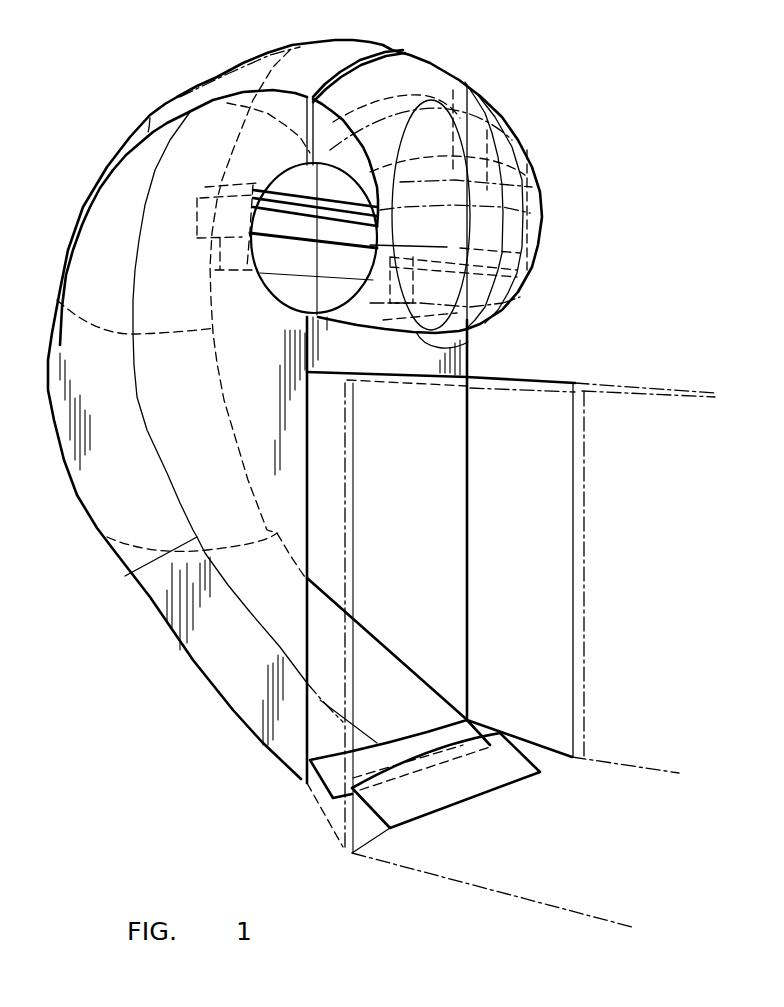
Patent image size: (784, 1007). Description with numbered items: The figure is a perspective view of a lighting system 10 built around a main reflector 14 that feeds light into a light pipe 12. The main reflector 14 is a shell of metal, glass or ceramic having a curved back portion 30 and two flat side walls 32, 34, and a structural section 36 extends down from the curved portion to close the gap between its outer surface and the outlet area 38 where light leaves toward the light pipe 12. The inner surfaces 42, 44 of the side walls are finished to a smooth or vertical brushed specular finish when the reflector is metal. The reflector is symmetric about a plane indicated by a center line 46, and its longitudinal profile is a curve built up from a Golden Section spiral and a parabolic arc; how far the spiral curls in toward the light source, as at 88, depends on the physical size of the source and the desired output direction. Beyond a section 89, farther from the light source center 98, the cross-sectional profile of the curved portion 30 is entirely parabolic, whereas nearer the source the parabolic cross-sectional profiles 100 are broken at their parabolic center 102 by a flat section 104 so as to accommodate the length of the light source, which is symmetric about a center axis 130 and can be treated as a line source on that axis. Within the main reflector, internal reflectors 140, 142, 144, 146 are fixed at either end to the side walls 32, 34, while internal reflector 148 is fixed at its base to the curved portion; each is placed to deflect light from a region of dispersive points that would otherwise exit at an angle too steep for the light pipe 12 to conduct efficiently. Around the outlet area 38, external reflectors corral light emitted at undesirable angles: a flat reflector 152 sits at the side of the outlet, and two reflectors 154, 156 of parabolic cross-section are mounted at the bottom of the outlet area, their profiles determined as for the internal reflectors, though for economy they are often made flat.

The lighting system 10 is at (108, 163).
The light pipe 12 is at (490, 890).
The main reflector 14 is at (267, 50).
The curved back portion 30 is at (157, 109).
The side wall 32 is at (200, 446).
The side wall 34 is at (420, 458).
The structural section 36 is at (396, 369).
The outlet area 38 is at (416, 626).
The inner surface of side wall 42 is at (300, 710).
The inner surface of side wall 44 is at (455, 670).
The center line 46 is at (472, 110).
The spiral curl point 88 is at (469, 342).
The section 89 is at (424, 14).
The light source center 98 is at (400, 240).
The parabolic cross-sectional profile 100 is at (539, 237).
The parabolic center 102 is at (535, 240).
The flat section 104 is at (569, 113).
The center axis 130 is at (314, 240).
The internal reflector 140 is at (247, 267).
The internal reflector 142 is at (238, 232).
The internal reflector 144 is at (255, 190).
The internal reflector 146 is at (267, 170).
The internal reflector 148 is at (500, 284).
The external reflector 152 is at (562, 565).
The external reflector 154 is at (449, 807).
The external reflector 156 is at (305, 779).